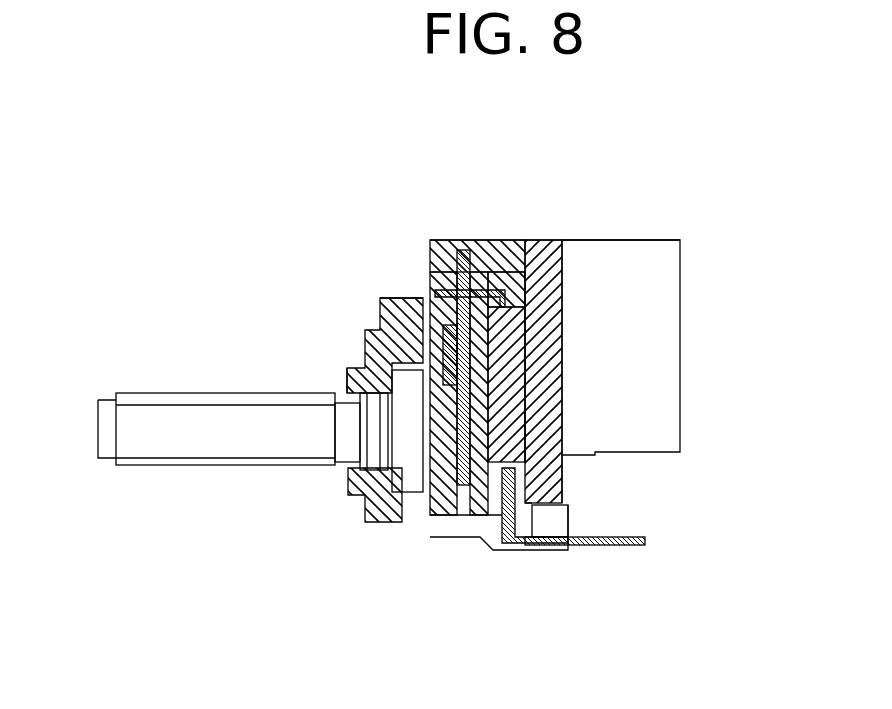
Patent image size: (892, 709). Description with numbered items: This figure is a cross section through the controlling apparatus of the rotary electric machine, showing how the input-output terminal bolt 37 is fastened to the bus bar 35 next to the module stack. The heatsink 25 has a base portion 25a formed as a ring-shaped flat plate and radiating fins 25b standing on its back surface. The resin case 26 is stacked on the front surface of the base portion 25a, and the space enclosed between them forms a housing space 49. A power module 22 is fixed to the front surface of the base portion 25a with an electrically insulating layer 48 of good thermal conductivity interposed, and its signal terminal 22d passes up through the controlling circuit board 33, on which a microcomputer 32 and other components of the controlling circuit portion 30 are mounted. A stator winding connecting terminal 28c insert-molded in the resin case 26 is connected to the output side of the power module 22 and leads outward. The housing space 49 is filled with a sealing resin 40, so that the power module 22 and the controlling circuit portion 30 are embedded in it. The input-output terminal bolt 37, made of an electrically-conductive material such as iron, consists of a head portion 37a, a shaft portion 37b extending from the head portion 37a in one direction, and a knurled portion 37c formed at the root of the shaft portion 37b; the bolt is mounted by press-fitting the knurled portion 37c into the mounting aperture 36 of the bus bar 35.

The power module 22 is at (540, 418).
The signal terminal 22d is at (487, 245).
The heatsink 25 is at (606, 354).
The base portion 25a is at (550, 245).
The radiating fins 25b is at (638, 250).
The resin case 26 is at (508, 230).
The stator winding connecting terminal 28c is at (590, 550).
The controlling circuit portion 30 is at (440, 513).
The microcomputer 32 is at (408, 298).
The controlling circuit board 33 is at (458, 250).
The bus bar 35 is at (366, 290).
The mounting aperture 36 is at (350, 378).
The input-output terminal bolt 37 is at (229, 434).
The head portion 37a is at (392, 523).
The shaft portion 37b is at (230, 466).
The knurled portion 37c is at (350, 465).
The sealing resin 40 is at (490, 500).
The electrically insulating layer 48 is at (565, 363).
The housing space 49 is at (453, 513).